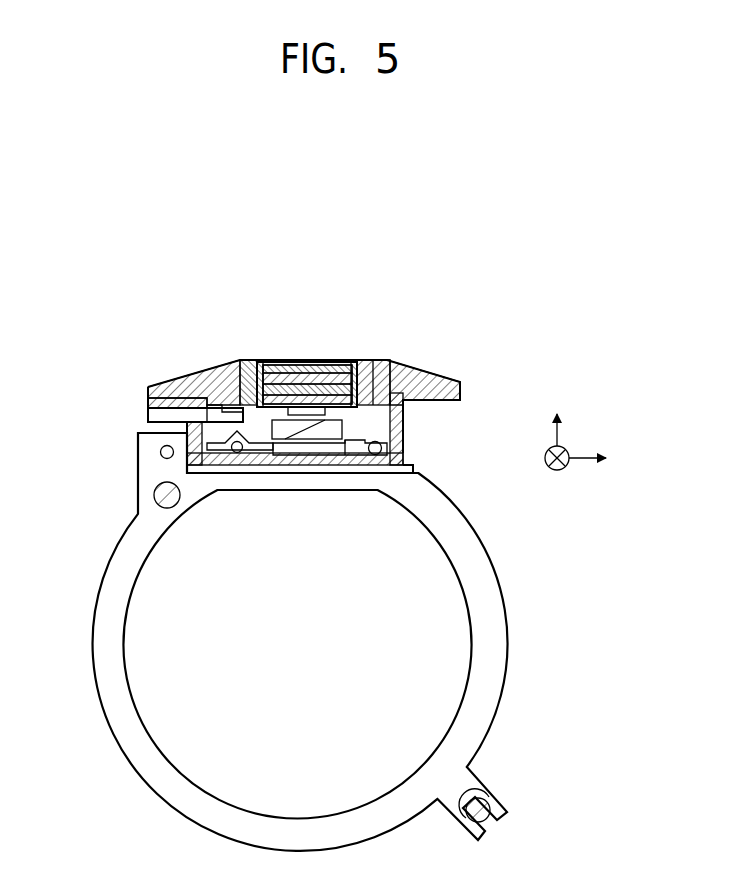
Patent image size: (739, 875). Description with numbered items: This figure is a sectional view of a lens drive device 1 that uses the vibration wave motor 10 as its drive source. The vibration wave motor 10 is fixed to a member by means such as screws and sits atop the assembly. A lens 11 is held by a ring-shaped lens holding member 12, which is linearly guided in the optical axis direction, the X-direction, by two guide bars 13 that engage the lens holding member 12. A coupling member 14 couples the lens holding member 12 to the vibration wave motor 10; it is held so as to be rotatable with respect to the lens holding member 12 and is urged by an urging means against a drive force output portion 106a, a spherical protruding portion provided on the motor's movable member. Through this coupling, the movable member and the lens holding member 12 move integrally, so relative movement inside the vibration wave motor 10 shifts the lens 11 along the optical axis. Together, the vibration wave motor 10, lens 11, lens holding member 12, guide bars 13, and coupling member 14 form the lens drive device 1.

The lens drive device 1 is at (442, 285).
The vibration wave motor 10 is at (317, 360).
The lens 11 is at (158, 695).
The lens holding member 12 is at (173, 787).
The guide bars 13 is at (152, 497).
The coupling member 14 is at (162, 422).
The drive force output portion 106a is at (230, 417).